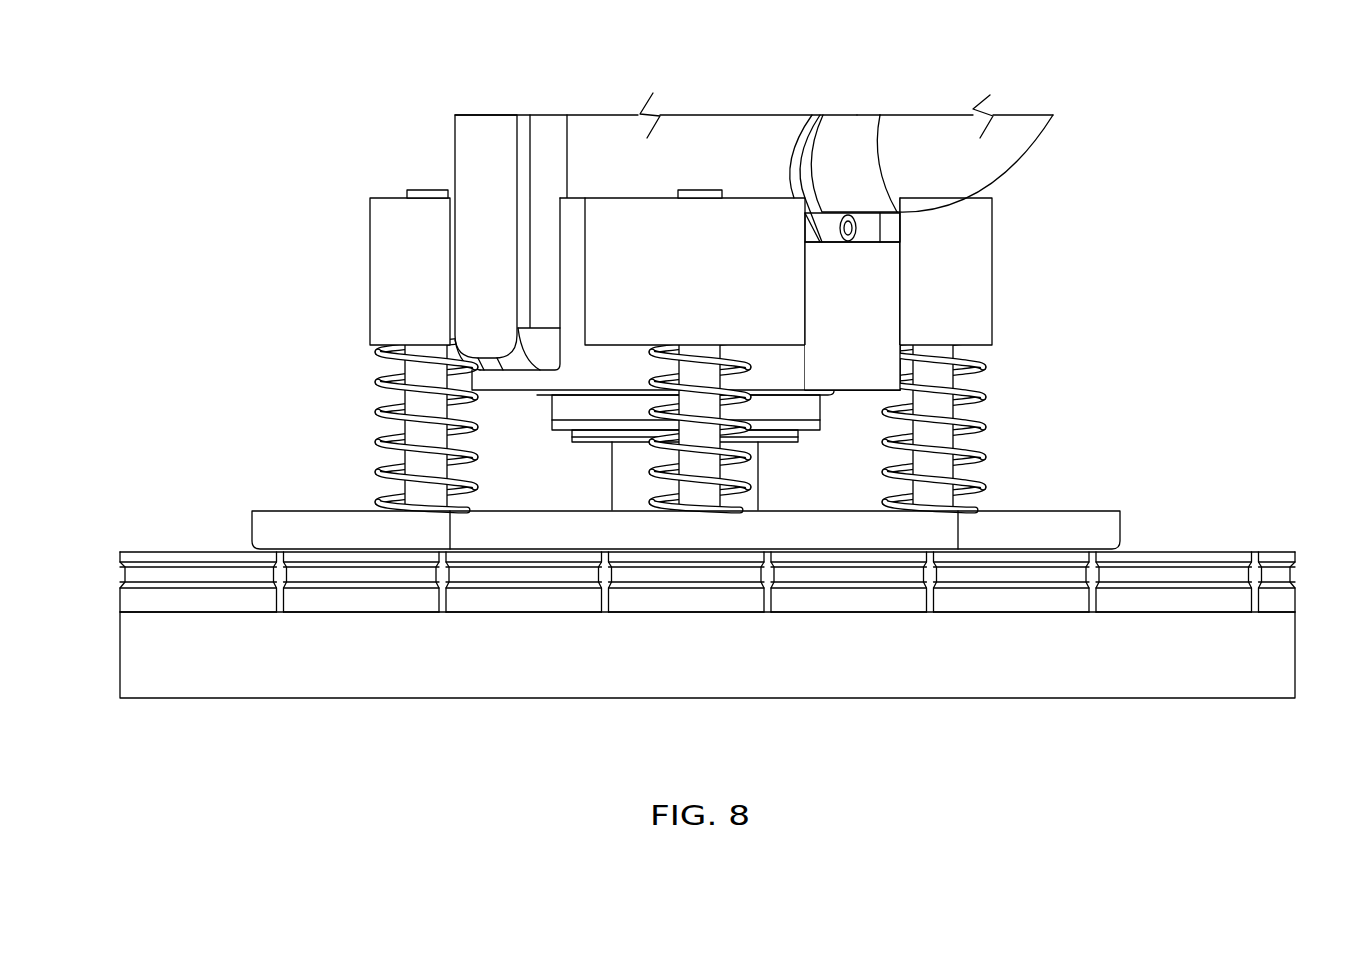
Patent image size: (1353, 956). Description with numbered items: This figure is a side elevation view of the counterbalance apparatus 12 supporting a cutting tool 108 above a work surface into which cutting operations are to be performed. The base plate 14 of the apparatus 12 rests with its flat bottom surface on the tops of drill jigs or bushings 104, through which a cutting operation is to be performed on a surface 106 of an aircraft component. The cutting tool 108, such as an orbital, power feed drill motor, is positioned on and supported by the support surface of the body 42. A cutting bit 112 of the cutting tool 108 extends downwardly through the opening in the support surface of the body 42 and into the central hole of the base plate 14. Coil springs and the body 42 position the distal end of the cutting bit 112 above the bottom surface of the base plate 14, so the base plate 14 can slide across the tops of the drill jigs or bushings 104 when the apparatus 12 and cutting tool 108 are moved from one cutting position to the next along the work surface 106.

The apparatus 12 is at (208, 230).
The base plate 14 is at (1137, 503).
The body 42 is at (1003, 254).
The drill jigs or bushings 104 is at (212, 551).
The surface 106 is at (168, 612).
The cutting tool 108 is at (455, 140).
The cutting bit 112 is at (625, 476).